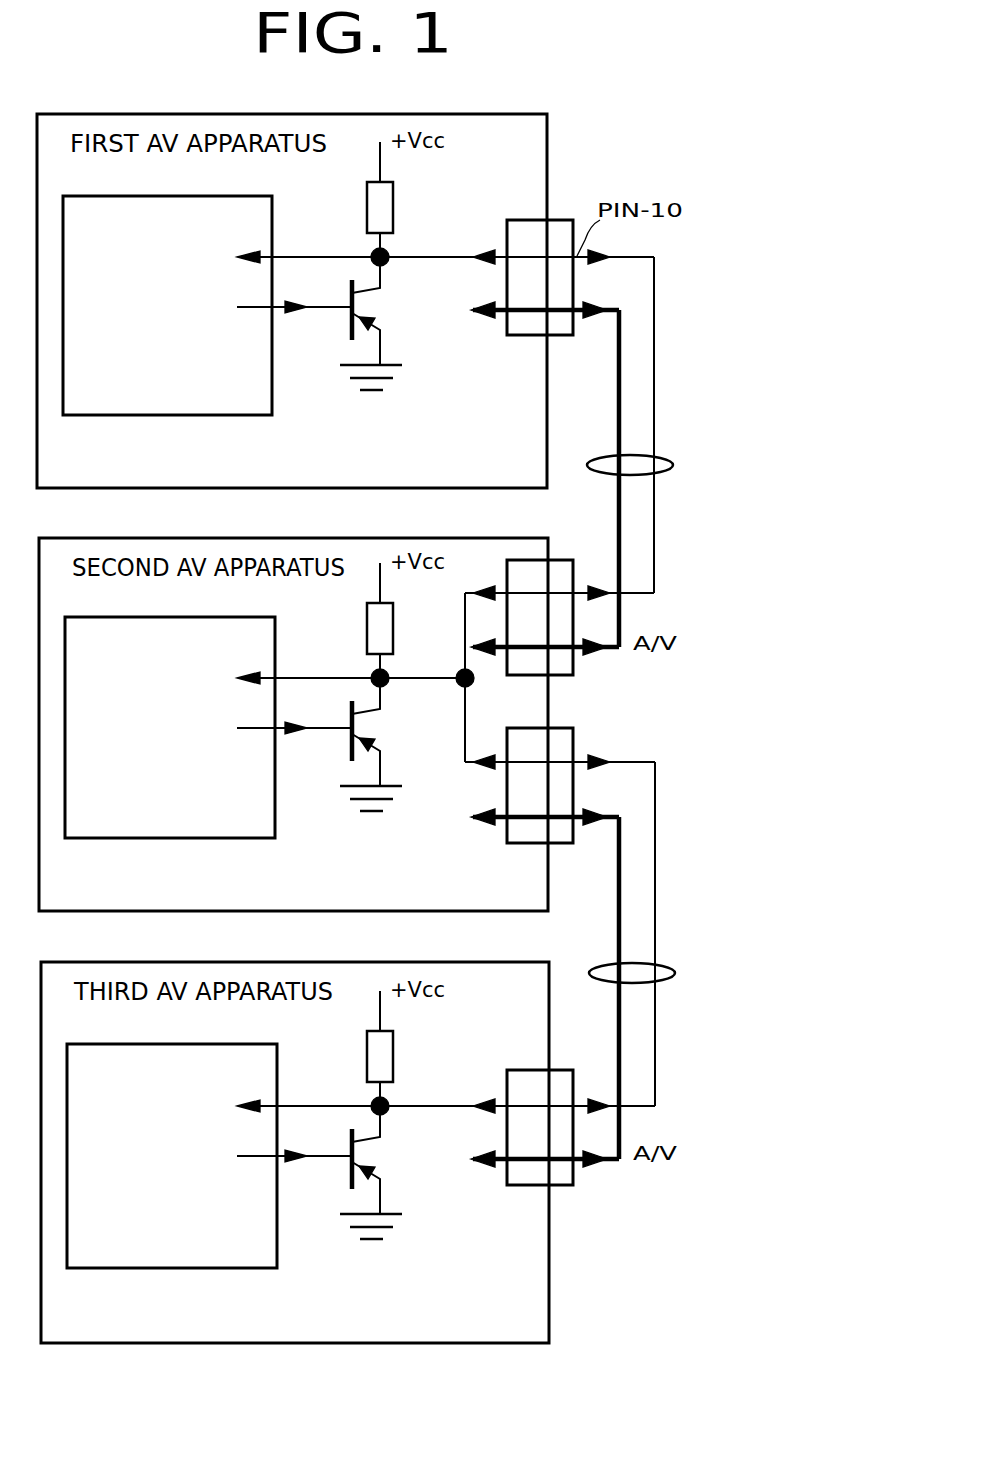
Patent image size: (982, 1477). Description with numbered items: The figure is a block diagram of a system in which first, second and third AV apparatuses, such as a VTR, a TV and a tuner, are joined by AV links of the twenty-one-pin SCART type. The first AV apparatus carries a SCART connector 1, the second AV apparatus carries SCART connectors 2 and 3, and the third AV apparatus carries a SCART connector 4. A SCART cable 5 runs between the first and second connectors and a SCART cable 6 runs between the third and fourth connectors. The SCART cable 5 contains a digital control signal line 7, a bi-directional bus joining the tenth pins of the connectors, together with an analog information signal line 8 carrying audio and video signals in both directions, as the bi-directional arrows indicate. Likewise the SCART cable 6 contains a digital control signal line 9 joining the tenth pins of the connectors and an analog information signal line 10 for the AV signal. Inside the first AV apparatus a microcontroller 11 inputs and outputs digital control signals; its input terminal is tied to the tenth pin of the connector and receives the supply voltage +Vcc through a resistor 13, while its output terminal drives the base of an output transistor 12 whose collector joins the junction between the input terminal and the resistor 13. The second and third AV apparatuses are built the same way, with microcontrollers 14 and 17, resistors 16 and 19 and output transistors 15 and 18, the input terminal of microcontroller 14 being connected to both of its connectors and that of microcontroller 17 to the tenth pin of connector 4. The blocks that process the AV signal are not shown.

The SCART connector 1 is at (556, 220).
The SCART connector 2 is at (558, 558).
The SCART connector 3 is at (563, 728).
The SCART connector 4 is at (563, 1070).
The SCART cable 5 is at (660, 470).
The SCART cable 6 is at (662, 980).
The digital control signal line 7 is at (654, 385).
The analog information signal line 8 is at (618, 409).
The digital control signal line 9 is at (655, 870).
The analog information signal line 10 is at (619, 931).
The microcontroller 11 is at (232, 415).
The output transistor 12 is at (372, 304).
The resistor 13 is at (393, 210).
The microcontroller 14 is at (210, 838).
The output transistor 15 is at (343, 745).
The resistor 16 is at (369, 628).
The microcontroller 17 is at (202, 1268).
The output transistor 18 is at (385, 1158).
The resistor 19 is at (398, 1060).